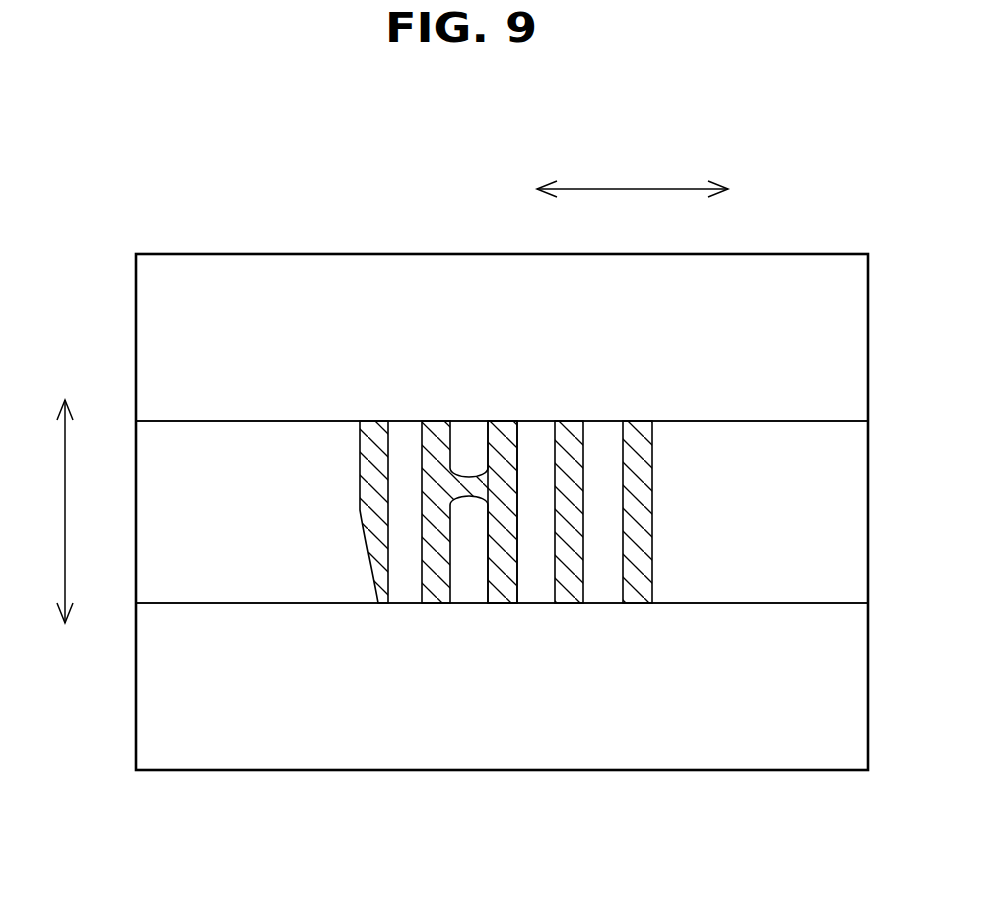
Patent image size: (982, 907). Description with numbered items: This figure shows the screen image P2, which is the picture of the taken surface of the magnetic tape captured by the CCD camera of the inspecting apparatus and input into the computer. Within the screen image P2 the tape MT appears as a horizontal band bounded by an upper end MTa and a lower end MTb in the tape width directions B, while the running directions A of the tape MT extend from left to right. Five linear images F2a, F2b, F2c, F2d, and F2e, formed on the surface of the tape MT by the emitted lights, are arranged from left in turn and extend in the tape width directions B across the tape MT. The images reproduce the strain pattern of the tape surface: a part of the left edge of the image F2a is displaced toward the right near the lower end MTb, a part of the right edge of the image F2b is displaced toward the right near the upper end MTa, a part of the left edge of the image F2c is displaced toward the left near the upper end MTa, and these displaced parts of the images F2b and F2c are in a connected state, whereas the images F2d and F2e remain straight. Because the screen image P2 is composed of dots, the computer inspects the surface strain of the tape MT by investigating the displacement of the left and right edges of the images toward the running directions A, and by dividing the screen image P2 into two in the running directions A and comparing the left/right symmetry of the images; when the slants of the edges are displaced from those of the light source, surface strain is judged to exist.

The screen image P2 is at (293, 233).
The running directions A is at (632, 172).
The tape width directions B is at (47, 511).
The tape MT is at (446, 392).
The upper end MTa is at (753, 421).
The lower end MTb is at (823, 604).
The image F2a is at (380, 578).
The image F2b is at (441, 583).
The image F2c is at (496, 594).
The image F2d is at (574, 583).
The image F2e is at (637, 593).